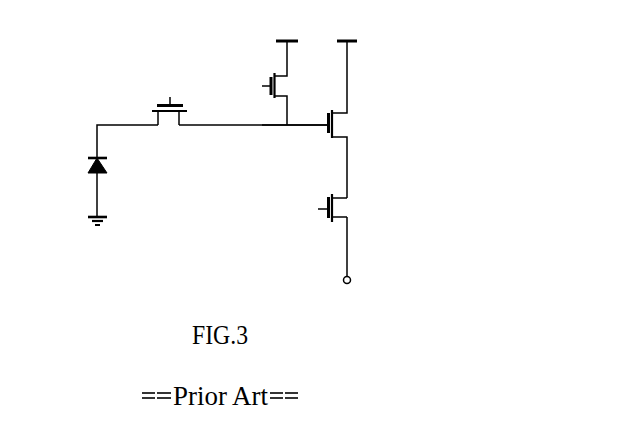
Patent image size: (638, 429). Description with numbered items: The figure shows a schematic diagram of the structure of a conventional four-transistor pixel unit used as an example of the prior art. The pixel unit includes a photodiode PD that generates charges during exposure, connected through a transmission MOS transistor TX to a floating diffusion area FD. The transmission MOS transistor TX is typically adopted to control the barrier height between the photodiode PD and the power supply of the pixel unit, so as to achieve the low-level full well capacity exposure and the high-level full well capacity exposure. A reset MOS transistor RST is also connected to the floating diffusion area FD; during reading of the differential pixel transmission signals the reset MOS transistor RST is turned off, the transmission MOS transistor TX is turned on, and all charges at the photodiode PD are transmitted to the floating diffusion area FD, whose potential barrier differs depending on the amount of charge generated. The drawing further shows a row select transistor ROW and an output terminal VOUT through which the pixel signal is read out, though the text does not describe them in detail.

The photodiode PD is at (112, 191).
The transmission MOS transistor TX is at (169, 101).
The reset MOS transistor RST is at (257, 83).
The floating diffusion area FD is at (295, 135).
The row select transistor ROW is at (309, 208).
The output terminal VOUT is at (311, 250).